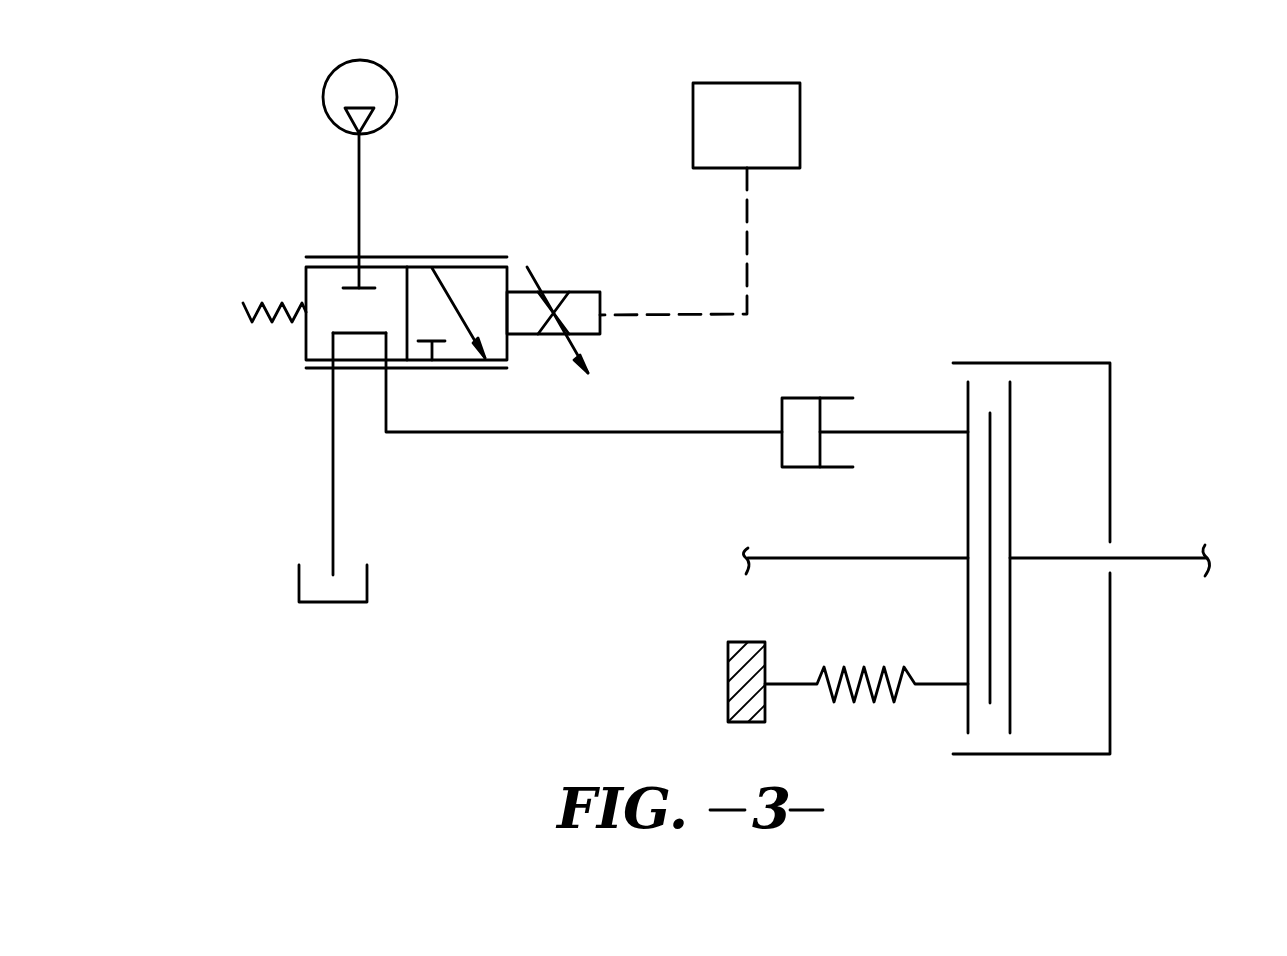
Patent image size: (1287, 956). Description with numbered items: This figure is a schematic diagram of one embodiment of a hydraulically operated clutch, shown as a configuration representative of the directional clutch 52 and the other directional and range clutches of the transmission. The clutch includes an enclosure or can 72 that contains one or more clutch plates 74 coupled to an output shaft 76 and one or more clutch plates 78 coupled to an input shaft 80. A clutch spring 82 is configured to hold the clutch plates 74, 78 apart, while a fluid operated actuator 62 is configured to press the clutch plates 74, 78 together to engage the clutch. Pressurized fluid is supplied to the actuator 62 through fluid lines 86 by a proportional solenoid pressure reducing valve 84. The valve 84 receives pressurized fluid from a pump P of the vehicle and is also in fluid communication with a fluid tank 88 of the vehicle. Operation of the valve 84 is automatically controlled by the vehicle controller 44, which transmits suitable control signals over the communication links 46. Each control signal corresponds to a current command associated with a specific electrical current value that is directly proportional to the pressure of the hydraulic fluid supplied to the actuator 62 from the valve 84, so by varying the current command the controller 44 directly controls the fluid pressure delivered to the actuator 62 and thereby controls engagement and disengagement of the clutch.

The pump P is at (397, 92).
The vehicle controller 44 is at (761, 139).
The communication links 46 is at (748, 292).
The directional clutch 52 is at (1033, 195).
The actuator 62 is at (820, 415).
The can 72 is at (1053, 363).
The clutch plates 74 is at (1012, 472).
The output shaft 76 is at (1140, 558).
The clutch plates 78 is at (967, 645).
The input shaft 80 is at (788, 548).
The clutch spring 82 is at (865, 690).
The proportional solenoid pressure reducing valve 84 is at (306, 290).
The fluid lines 86 is at (357, 210).
The fluid tank 88 is at (299, 580).